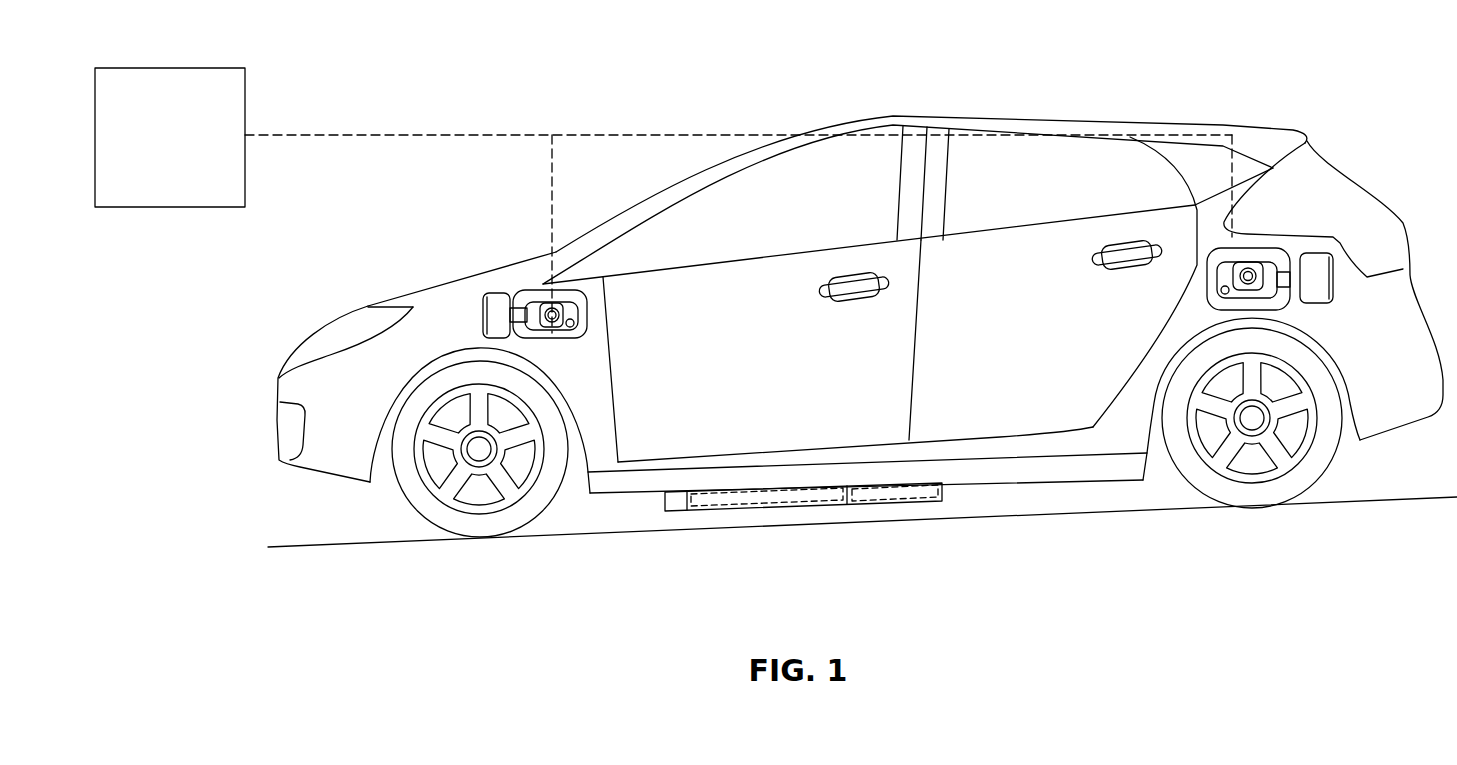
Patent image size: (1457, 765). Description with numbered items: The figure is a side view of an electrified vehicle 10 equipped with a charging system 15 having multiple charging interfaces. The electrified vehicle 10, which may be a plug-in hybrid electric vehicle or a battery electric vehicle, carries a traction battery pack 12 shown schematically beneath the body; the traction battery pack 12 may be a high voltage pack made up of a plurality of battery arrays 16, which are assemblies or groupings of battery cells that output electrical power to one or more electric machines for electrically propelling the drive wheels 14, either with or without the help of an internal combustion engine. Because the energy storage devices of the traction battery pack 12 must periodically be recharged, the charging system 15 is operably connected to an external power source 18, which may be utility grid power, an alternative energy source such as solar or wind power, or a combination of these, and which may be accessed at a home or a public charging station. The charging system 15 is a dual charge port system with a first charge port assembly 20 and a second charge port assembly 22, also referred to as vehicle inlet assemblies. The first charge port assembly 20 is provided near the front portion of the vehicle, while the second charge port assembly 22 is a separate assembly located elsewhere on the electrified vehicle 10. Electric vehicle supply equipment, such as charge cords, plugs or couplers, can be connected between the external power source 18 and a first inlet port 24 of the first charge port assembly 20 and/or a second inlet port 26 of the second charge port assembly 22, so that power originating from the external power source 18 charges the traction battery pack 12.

The electrified vehicle 10 is at (1010, 106).
The traction battery pack 12 is at (677, 514).
The drive wheels 14 is at (483, 525).
The charging system 15 is at (725, 292).
The battery arrays 16 is at (733, 508).
The external power source 18 is at (245, 93).
The first charge port assembly 20 is at (542, 283).
The second charge port assembly 22 is at (1240, 243).
The first inlet port 24 is at (563, 318).
The second inlet port 26 is at (1263, 287).